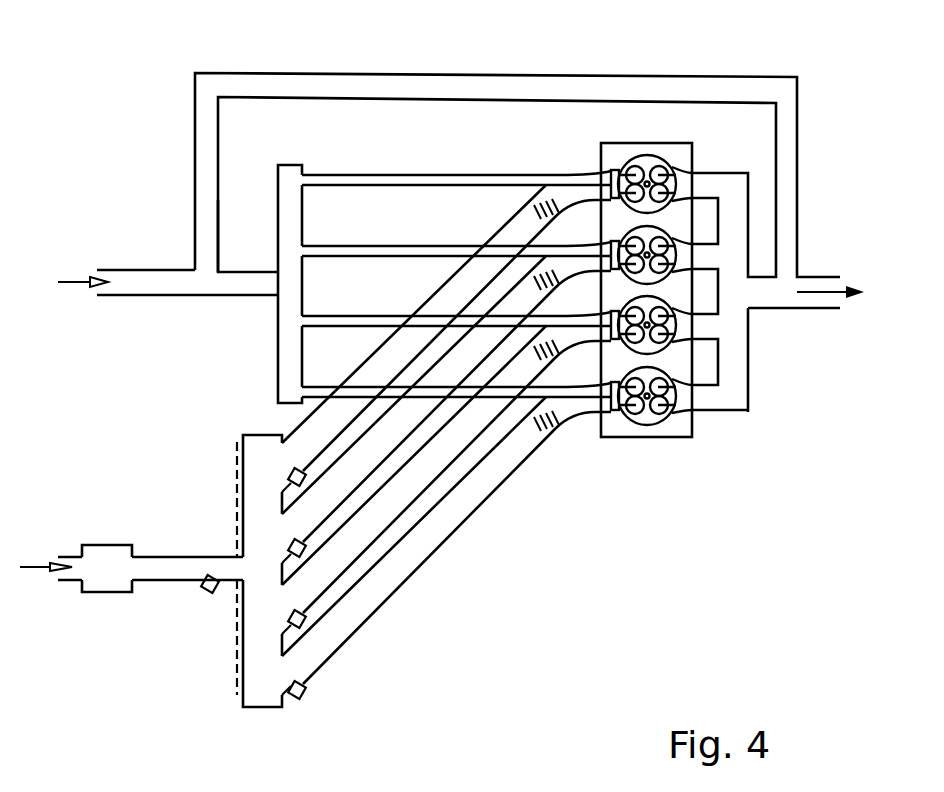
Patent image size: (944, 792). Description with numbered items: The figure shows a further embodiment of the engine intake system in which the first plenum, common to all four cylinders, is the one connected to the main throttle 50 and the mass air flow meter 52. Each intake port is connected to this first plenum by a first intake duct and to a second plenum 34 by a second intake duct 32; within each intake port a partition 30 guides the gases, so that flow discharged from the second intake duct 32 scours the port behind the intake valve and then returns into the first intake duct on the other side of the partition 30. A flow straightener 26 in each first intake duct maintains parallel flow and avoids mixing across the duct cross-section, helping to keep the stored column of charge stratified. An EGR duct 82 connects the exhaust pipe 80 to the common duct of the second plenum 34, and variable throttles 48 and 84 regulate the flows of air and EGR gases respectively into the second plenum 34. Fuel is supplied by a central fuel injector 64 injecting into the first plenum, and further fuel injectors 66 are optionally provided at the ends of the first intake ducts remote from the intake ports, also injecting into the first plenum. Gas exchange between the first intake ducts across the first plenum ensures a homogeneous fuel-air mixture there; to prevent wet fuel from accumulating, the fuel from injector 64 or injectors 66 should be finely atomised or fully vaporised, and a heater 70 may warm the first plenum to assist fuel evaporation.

The EGR duct 82 is at (323, 85).
The variable throttle 84 is at (208, 220).
The variable throttle 48 is at (167, 283).
The second plenum 34 is at (286, 182).
The second intake duct 32 is at (557, 183).
The partition 30 is at (623, 175).
The exhaust pipe 80 is at (768, 297).
The flow straightener 26 is at (555, 423).
The fuel injector 66 is at (297, 695).
The heater 70 is at (238, 642).
The main throttle 50 is at (162, 556).
The mass air flow meter 52 is at (102, 552).
The central fuel injector 64 is at (204, 590).